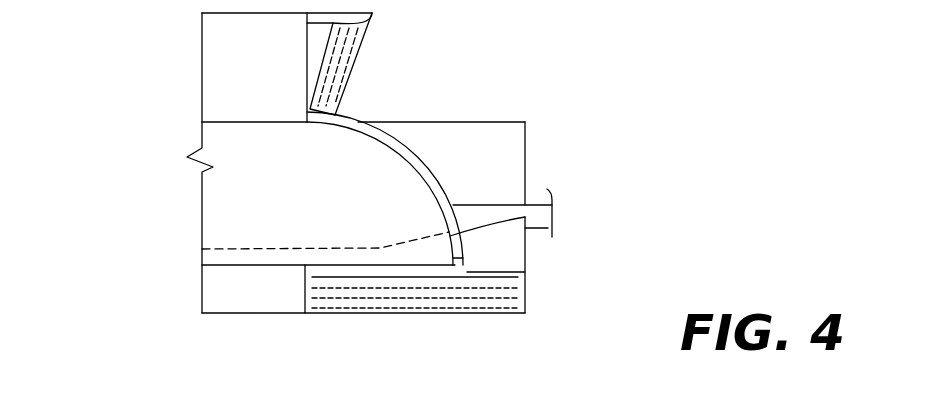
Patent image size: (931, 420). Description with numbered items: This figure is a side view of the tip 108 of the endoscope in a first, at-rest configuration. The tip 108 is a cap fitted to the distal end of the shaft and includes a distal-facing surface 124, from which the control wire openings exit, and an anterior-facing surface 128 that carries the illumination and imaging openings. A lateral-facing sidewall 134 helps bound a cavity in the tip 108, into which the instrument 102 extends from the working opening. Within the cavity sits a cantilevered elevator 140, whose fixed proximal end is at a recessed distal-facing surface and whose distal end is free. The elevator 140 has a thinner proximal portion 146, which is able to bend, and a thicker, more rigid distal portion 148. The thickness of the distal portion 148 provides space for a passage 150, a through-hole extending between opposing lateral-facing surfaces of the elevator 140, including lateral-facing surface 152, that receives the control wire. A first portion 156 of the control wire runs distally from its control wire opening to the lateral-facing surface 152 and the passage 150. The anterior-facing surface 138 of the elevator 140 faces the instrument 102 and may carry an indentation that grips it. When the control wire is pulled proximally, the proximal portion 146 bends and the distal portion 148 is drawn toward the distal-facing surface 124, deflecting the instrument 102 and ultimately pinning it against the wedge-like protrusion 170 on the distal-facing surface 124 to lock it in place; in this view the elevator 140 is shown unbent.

The tip 108 is at (157, 129).
The protrusion 170 is at (366, 37).
The distal-facing surface 124 is at (307, 60).
The first portion of control wire 156 is at (417, 153).
The anterior-facing surface 128 is at (508, 121).
The lateral-facing sidewall 134 is at (513, 142).
The instrument 102 is at (537, 205).
The anterior-facing surface of elevator 138 is at (490, 223).
The proximal portion 146 is at (263, 263).
The passage 150 is at (460, 266).
The distal portion 148 is at (507, 297).
The elevator 140 is at (455, 319).
The lateral-facing surface 152 is at (510, 265).